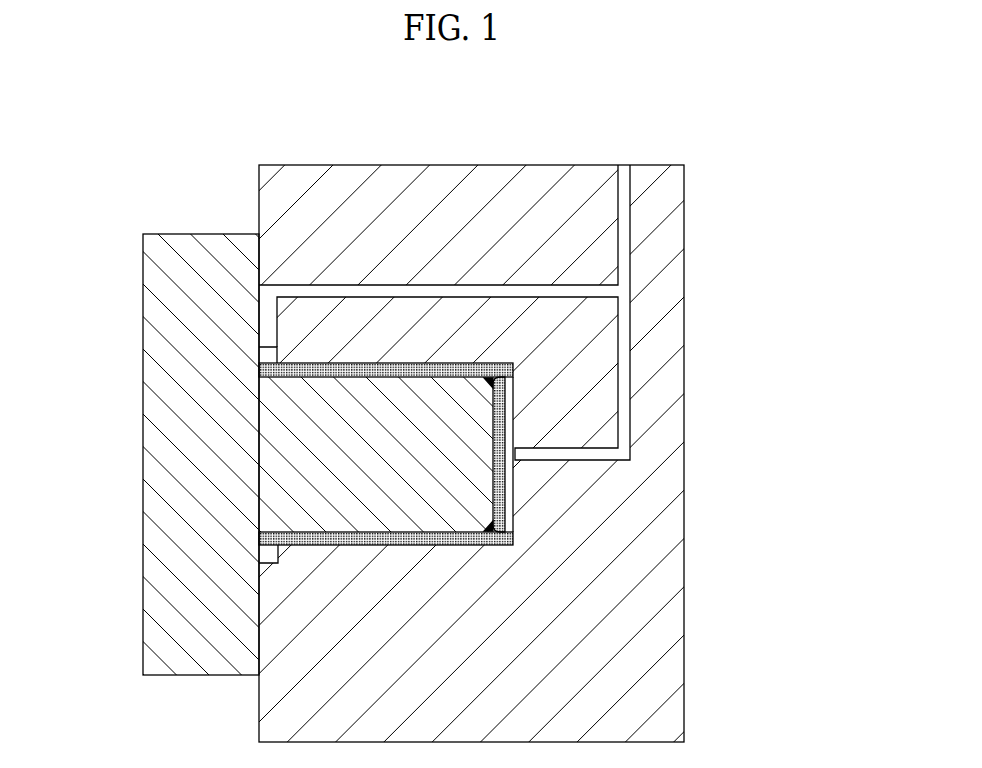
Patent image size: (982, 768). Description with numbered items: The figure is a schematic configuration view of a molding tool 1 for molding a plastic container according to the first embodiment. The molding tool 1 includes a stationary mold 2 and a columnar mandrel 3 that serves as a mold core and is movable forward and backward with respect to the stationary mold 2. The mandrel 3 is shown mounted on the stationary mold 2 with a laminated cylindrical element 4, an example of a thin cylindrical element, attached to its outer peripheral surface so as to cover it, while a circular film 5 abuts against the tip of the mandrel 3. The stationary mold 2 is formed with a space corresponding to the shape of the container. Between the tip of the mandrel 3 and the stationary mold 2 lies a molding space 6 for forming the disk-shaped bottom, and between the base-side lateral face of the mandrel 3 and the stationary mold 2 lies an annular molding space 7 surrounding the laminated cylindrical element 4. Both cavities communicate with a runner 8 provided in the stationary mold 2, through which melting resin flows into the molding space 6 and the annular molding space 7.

The molding tool 1 is at (700, 144).
The stationary mold 2 is at (500, 166).
The mandrel 3 is at (270, 429).
The laminated cylindrical element 4 is at (353, 363).
The circular film 5 is at (508, 477).
The molding space 6 is at (508, 527).
The annular molding space 7 is at (275, 348).
The runner 8 is at (440, 285).